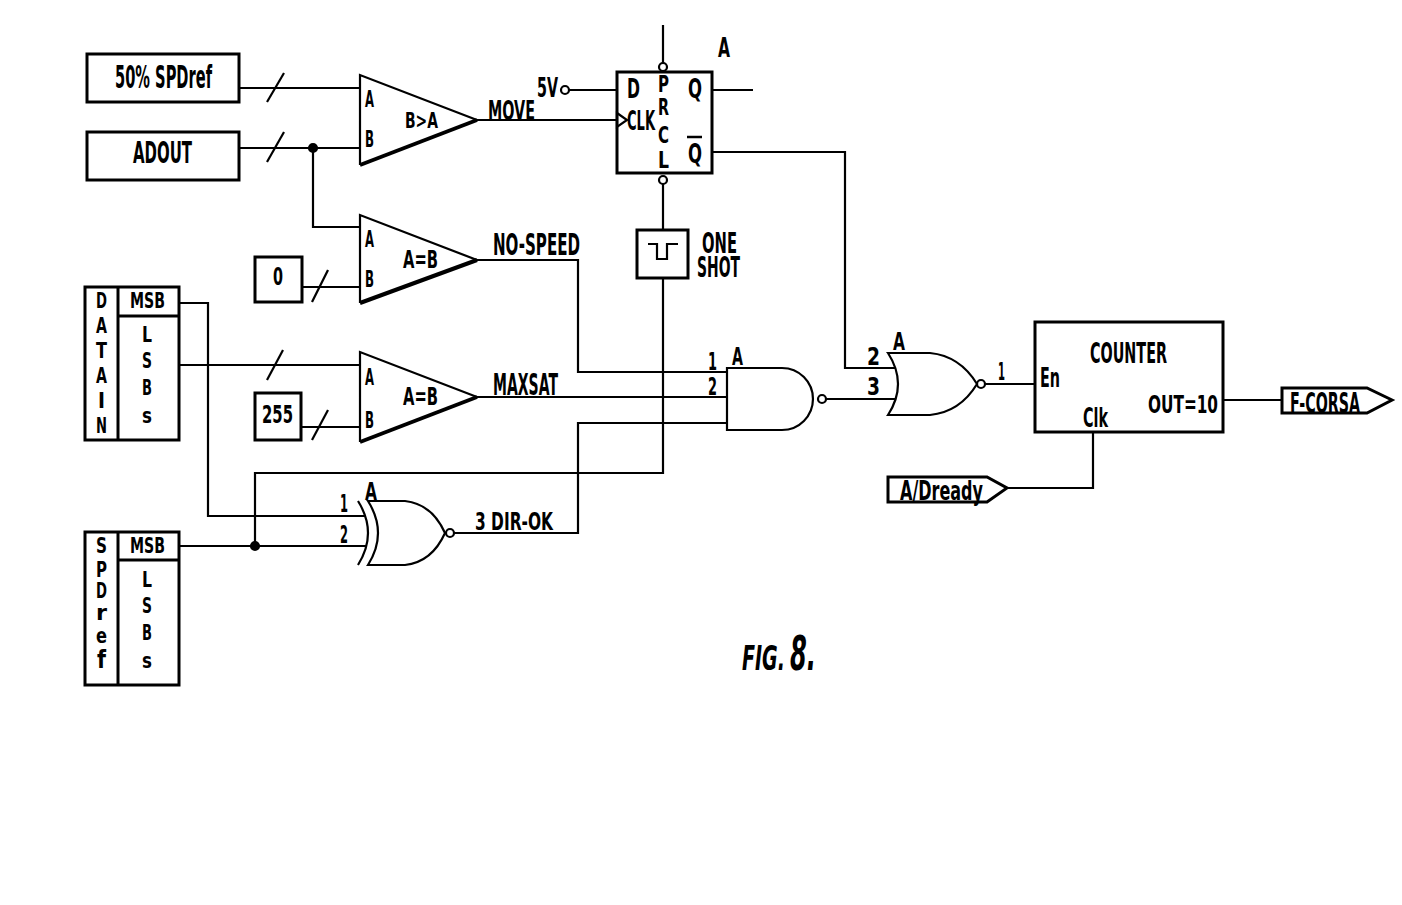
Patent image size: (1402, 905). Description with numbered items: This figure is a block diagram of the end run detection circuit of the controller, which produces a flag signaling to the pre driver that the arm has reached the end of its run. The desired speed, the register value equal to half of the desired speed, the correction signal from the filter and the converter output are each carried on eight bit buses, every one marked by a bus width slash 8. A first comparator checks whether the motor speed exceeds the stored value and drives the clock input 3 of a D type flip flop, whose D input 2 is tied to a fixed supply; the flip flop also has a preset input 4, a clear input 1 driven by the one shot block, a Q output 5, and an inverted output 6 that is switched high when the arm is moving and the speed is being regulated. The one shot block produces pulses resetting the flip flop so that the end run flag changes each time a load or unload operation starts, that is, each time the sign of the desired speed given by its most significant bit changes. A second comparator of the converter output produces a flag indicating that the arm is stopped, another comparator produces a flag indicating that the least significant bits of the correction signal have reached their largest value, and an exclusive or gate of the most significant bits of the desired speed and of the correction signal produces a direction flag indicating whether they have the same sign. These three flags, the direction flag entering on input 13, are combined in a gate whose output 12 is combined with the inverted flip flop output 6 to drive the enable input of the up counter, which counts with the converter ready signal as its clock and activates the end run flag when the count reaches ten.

The 8-bit data bus 8 is at (304, 246).
The flip-flop preset input 4 is at (664, 99).
The flip-flop clear input 1 is at (668, 203).
The flip-flop D input 2 is at (589, 78).
The flip-flop clock input 3 is at (547, 109).
The flip-flop Q output 5 is at (732, 75).
The flip-flop inverted Q output 6 is at (803, 247).
The NAND gate output 12 is at (856, 388).
The NAND gate input 13 is at (590, 466).